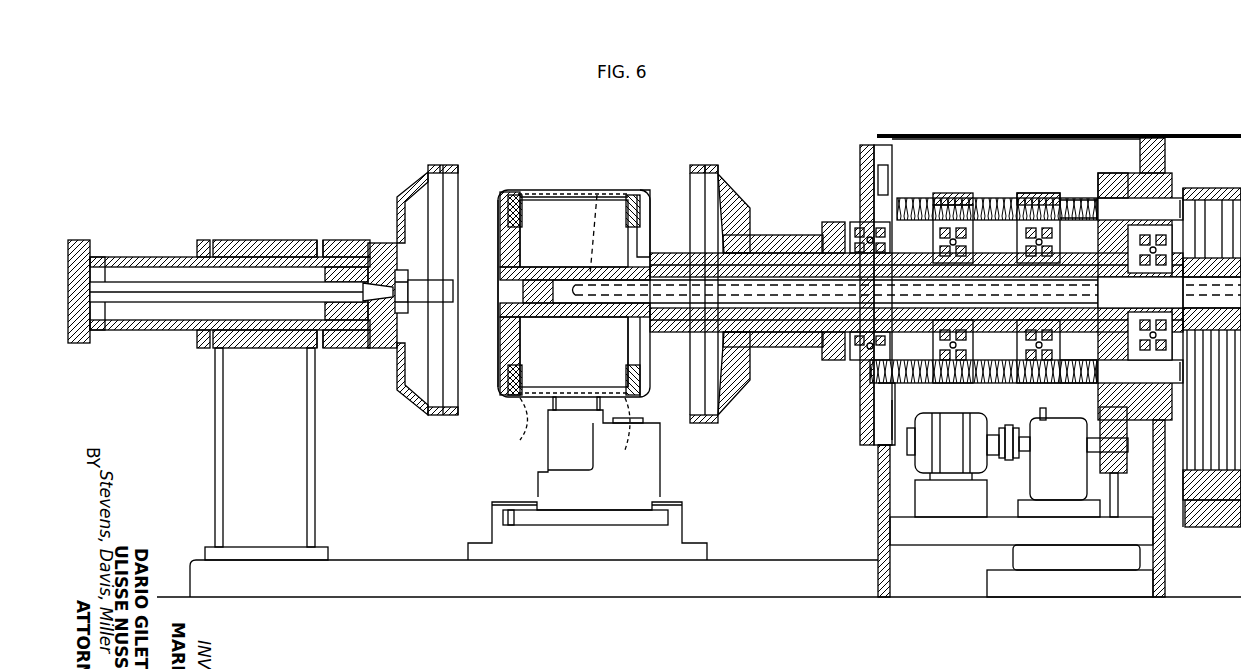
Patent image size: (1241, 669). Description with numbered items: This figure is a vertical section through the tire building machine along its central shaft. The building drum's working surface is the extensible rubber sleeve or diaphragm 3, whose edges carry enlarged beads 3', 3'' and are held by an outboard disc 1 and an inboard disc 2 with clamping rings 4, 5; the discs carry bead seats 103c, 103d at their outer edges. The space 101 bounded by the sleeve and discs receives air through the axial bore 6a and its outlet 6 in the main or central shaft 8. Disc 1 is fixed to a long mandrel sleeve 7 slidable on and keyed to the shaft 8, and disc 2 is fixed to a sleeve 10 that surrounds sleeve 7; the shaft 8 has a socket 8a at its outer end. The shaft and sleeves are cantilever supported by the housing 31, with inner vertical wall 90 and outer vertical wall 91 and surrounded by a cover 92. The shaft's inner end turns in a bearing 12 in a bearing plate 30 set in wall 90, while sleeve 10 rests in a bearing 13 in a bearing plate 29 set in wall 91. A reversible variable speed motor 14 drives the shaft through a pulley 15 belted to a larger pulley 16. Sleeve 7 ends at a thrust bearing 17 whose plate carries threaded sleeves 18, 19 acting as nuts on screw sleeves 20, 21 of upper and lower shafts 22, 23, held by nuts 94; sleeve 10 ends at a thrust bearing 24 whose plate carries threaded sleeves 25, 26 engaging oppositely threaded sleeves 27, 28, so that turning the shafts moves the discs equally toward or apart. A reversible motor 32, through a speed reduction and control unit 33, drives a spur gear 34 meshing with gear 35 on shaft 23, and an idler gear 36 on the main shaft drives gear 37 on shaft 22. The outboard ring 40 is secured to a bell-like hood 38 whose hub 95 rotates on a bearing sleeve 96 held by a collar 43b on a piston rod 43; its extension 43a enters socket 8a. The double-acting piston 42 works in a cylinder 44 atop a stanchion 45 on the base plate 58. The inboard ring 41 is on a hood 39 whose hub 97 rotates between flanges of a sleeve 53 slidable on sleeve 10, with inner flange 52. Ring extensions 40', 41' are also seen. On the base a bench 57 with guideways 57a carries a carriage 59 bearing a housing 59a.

The disc 1 is at (502, 205).
The disc 2 is at (648, 205).
The cylindrical sleeve or diaphragm 3 is at (574, 181).
The rib or bead 3' is at (514, 428).
The rib or bead 3'' is at (616, 433).
The clamping ring 4 is at (520, 210).
The clamping ring 5 is at (628, 205).
The outlet 6 is at (597, 195).
The axial passage or bore 6a is at (665, 325).
The mandrel or sleeve 7 is at (500, 262).
The main or central shaft 8 is at (578, 305).
The socket 8a is at (538, 280).
The mandrel or sleeve 10 is at (684, 253).
The bearing 12 is at (1165, 250).
The bearing 13 is at (858, 225).
The reversible, variable speed motor 14 is at (1140, 555).
The pulley 15 is at (1195, 520).
The pulley 16 is at (1225, 188).
The thrust bearing 17 is at (1040, 228).
The threaded sleeve 18 is at (1025, 193).
The threaded sleeve 19 is at (1012, 360).
The screw threaded sleeve 20 is at (1085, 198).
The screw threaded sleeve 21 is at (1078, 360).
The upper shaft 22 is at (1160, 200).
The lower shaft 23 is at (1115, 383).
The thrust bearing 24 is at (966, 245).
The threaded sleeve 25 is at (960, 193).
The threaded sleeve 26 is at (895, 420).
The screw-threaded sleeve 27 is at (945, 198).
The screw-threaded sleeve 28 is at (905, 388).
The bearing plate 29 is at (865, 145).
The bearing plate 30 is at (1150, 138).
The housing 31 is at (1010, 139).
The reversible motor 32 is at (915, 440).
The speed reduction and control unit 33 is at (1040, 486).
The spur gear 34 is at (1128, 465).
The gear 35 is at (1125, 345).
The idler gear 36 is at (1105, 265).
The gear 37 is at (1110, 180).
The bell-like hood 38 is at (415, 185).
The hood 39 is at (748, 210).
The outboard ring 40 is at (416, 269).
The disc rim 40' is at (447, 146).
The inboard ring 41 is at (704, 273).
The disc 41' is at (732, 149).
The piston 42 is at (105, 270).
The piston rod 43 is at (168, 290).
The extension 43a is at (430, 288).
The collar 43b is at (402, 275).
The cylinder 44 is at (200, 240).
The stanchion 45 is at (230, 417).
The inner flange 52 is at (822, 352).
The sleeve 53 is at (757, 245).
The bench 57 is at (672, 545).
The guideways 57a is at (500, 505).
The base plate 58 is at (422, 597).
The carriage 59 is at (640, 510).
The housing 59a is at (648, 462).
The inner vertical wall 90 is at (1165, 586).
The outer vertical wall 91 is at (878, 508).
The cover 92 is at (1085, 133).
The nuts 94 is at (1183, 210).
The hub 95 is at (332, 240).
The bearing sleeve 96 is at (352, 245).
The hub 97 is at (798, 245).
The space or chamber 101 is at (596, 388).
The bead seat 103c is at (512, 390).
The bead seat 103d is at (633, 390).